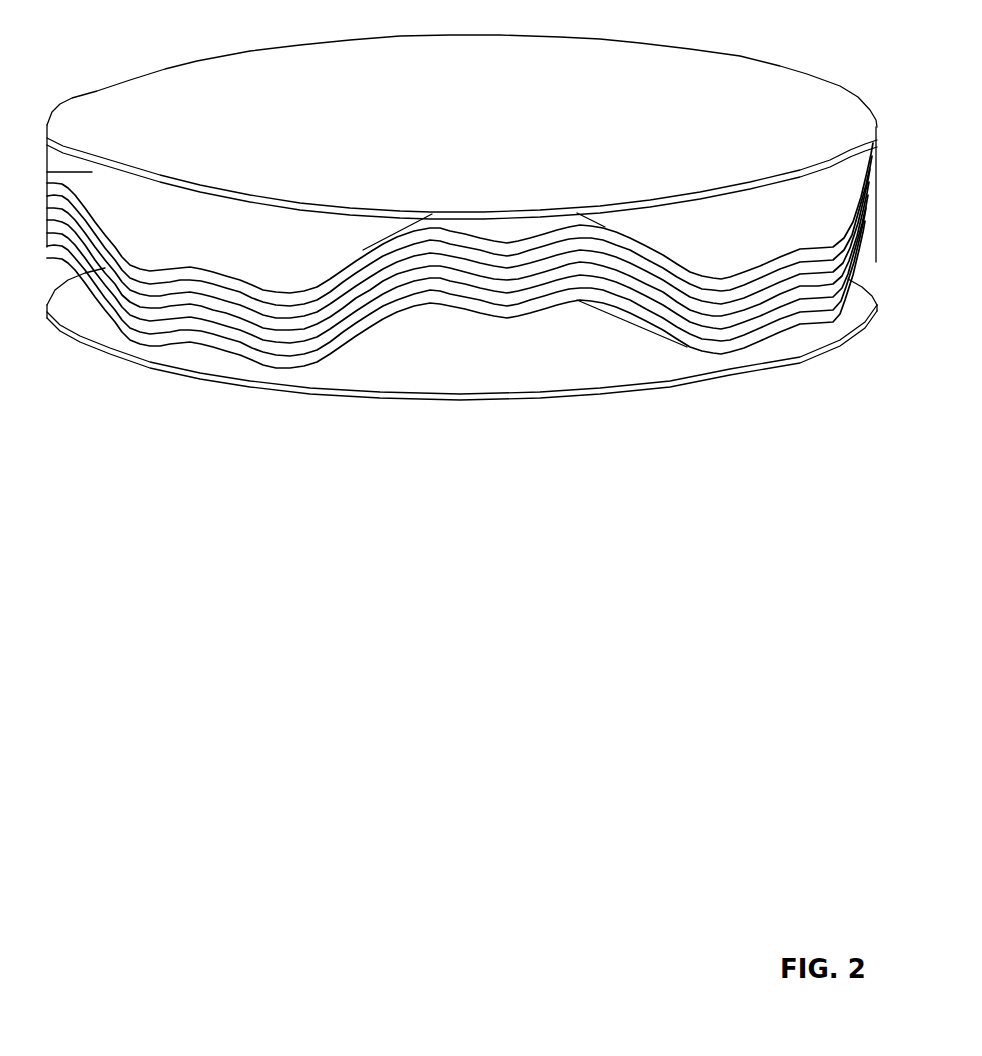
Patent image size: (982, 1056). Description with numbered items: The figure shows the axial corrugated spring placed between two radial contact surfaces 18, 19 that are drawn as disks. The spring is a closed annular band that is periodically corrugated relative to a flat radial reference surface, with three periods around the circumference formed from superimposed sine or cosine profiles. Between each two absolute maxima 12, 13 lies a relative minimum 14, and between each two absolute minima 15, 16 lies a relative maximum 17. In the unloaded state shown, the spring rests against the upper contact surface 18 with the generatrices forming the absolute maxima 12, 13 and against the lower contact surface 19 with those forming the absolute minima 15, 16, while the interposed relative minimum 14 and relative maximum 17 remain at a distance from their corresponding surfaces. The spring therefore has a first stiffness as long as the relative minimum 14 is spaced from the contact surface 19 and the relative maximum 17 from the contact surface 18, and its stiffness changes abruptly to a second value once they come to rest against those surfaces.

The absolute maximum 12 is at (436, 217).
The absolute maximum 13 is at (574, 217).
The relative minimum 14 is at (512, 228).
The absolute minimum 15 is at (138, 355).
The absolute minimum 16 is at (275, 378).
The relative maximum 17 is at (200, 360).
The radial contact surface 18 is at (97, 107).
The radial contact surface 19 is at (63, 300).